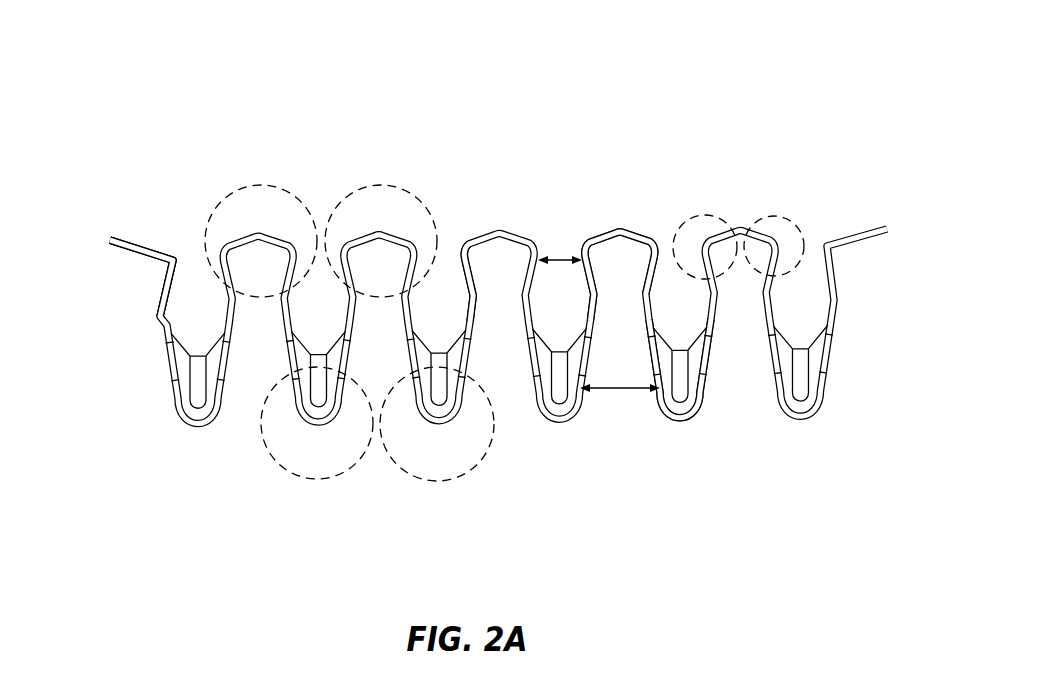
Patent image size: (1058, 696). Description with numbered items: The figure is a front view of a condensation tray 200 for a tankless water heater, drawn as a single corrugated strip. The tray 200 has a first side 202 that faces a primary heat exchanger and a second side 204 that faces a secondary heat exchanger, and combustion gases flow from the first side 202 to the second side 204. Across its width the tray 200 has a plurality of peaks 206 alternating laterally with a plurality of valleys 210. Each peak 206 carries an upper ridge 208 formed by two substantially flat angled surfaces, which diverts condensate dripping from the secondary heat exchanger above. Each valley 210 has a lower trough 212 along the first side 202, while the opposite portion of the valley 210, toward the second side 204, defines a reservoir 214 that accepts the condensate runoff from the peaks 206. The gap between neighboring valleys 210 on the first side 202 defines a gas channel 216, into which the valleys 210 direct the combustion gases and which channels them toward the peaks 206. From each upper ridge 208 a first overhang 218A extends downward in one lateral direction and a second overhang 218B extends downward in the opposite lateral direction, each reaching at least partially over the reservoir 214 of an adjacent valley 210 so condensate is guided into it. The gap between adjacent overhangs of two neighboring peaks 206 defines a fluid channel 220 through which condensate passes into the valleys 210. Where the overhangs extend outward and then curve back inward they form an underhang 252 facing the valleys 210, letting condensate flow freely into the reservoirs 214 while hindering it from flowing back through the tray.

The condensation tray 200 is at (245, 96).
The first side 202 is at (118, 252).
The second side 204 is at (148, 236).
The peaks 206 is at (358, 190).
The upper ridge 208 is at (621, 229).
The valleys 210 is at (420, 478).
The lower trough 212 is at (674, 428).
The reservoir 214 is at (801, 400).
The gas channel 216 is at (618, 392).
The first overhang 218A is at (714, 220).
The second overhang 218B is at (806, 226).
The fluid channel 220 is at (560, 256).
The underhang 252 is at (474, 262).